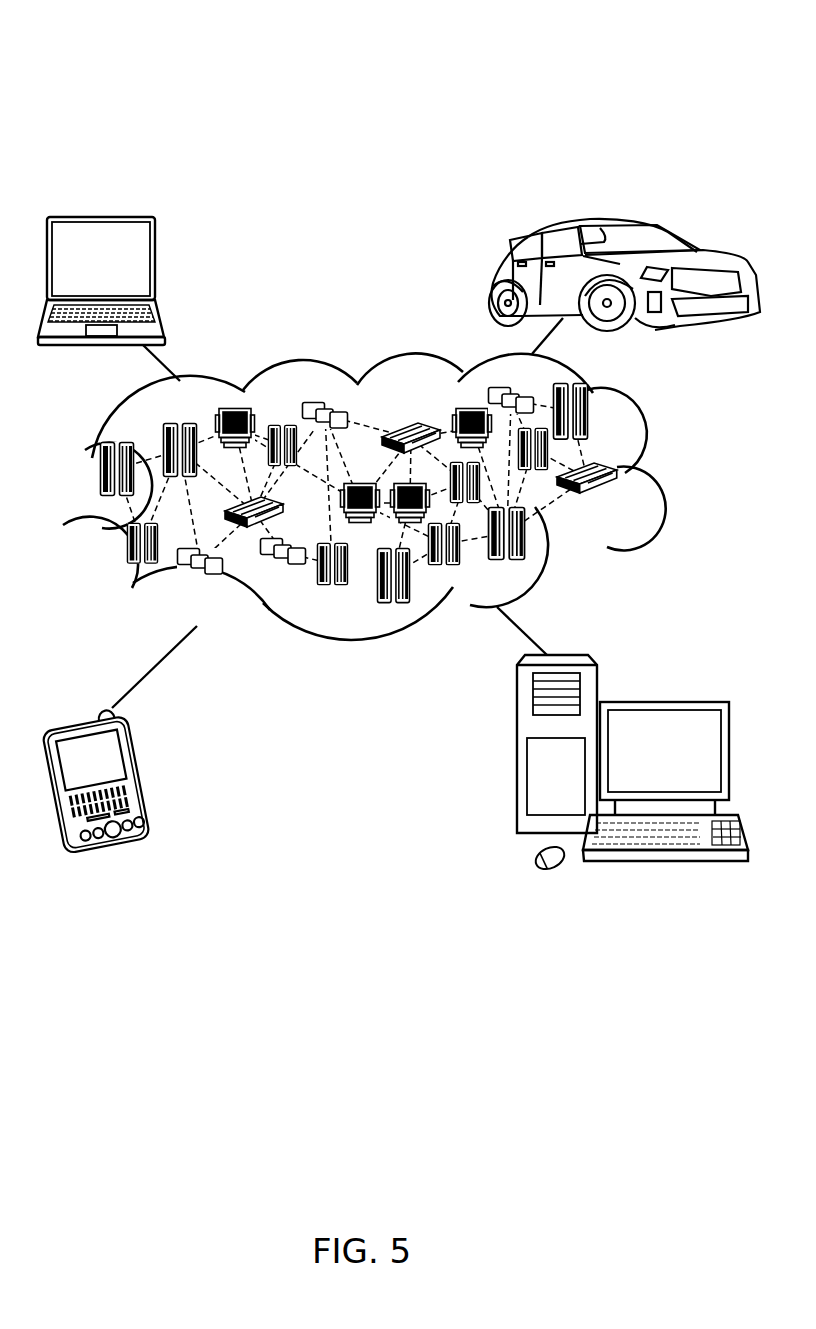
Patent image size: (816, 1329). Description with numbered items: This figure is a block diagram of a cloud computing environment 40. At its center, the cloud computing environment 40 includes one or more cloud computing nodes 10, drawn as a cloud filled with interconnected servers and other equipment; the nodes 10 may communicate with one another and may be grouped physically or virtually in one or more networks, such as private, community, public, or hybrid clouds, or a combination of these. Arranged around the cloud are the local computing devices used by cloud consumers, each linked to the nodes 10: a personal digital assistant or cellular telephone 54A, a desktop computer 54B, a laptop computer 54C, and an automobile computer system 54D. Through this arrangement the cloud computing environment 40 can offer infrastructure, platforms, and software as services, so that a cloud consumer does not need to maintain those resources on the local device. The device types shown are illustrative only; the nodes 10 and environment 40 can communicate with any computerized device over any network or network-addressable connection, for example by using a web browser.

The cloud computing environment 40 is at (287, 72).
The cloud computing nodes 10 is at (622, 503).
The personal digital assistant or cellular telephone 54A is at (150, 769).
The desktop computer 54B is at (665, 701).
The laptop computer 54C is at (155, 264).
The automobile computer system 54D is at (491, 282).